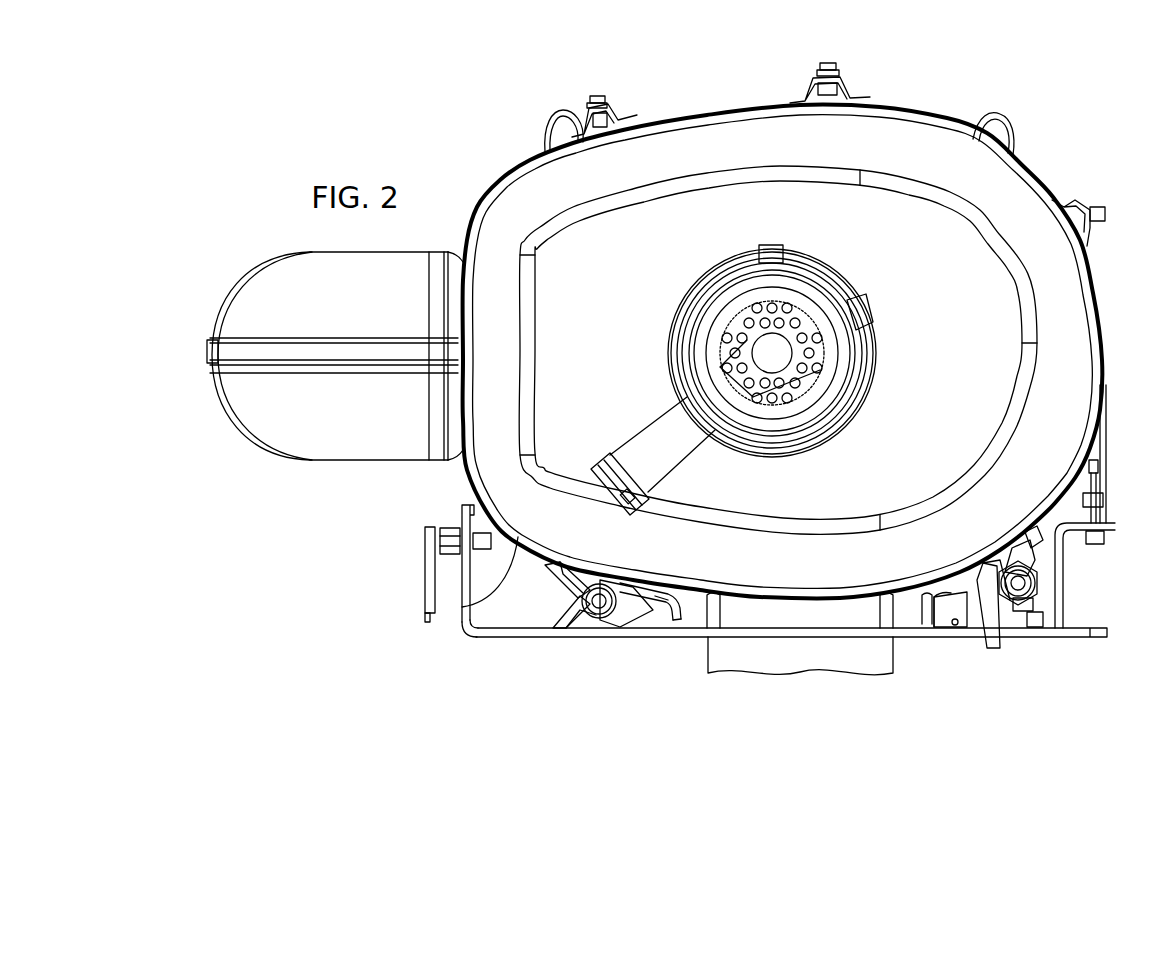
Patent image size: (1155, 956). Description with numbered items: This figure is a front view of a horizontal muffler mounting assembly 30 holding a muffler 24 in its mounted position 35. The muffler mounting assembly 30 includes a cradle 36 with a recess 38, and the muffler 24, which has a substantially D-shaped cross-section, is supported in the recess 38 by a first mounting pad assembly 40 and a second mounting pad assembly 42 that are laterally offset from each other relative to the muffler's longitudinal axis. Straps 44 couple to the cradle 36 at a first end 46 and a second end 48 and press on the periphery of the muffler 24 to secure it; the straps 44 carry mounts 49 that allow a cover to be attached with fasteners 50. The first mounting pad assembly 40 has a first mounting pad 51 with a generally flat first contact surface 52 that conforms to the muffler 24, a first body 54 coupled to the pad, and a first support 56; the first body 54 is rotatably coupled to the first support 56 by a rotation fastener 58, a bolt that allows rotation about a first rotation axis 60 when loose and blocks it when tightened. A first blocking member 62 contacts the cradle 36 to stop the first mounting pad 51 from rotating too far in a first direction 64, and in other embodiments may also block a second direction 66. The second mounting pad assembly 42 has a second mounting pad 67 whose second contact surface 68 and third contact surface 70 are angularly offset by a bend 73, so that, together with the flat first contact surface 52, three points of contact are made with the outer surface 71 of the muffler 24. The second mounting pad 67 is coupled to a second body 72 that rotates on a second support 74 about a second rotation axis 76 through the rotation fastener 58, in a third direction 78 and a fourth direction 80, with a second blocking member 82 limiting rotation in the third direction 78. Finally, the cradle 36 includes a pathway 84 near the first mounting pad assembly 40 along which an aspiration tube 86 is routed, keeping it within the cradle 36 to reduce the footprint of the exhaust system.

The muffler 24 is at (932, 152).
The muffler mounting assembly 30 is at (372, 661).
The mounted position 35 is at (1050, 121).
The cradle 36 is at (492, 639).
The recess 38 is at (461, 500).
The first mounting pad assembly 40 is at (533, 588).
The second mounting pad assembly 42 is at (1048, 553).
The straps 44 is at (1107, 416).
The first end 46 is at (432, 562).
The second end 48 is at (1099, 488).
The mounts 49 is at (620, 110).
The fasteners 50 is at (595, 97).
The first mounting pad 51 is at (663, 603).
The first contact surface 52 is at (652, 585).
The first body 54 is at (628, 606).
The first support 56 is at (570, 621).
The rotation fastener 58 is at (597, 603).
The first rotation axis 60 is at (562, 572).
The first blocking member 62 is at (678, 600).
The first direction 64 is at (590, 590).
The second direction 66 is at (594, 618).
The second mounting pad 67 is at (960, 602).
The second contact surface 68 is at (938, 602).
The third contact surface 70 is at (1034, 528).
The outer surface 71 is at (468, 600).
The second body 72 is at (984, 573).
The bend 73 is at (981, 602).
The second support 74 is at (1021, 617).
The second rotation axis 76 is at (1030, 591).
The third direction 78 is at (1001, 565).
The fourth direction 80 is at (1026, 602).
The second blocking member 82 is at (925, 616).
The pathway 84 is at (476, 609).
The aspiration tube 86 is at (660, 438).